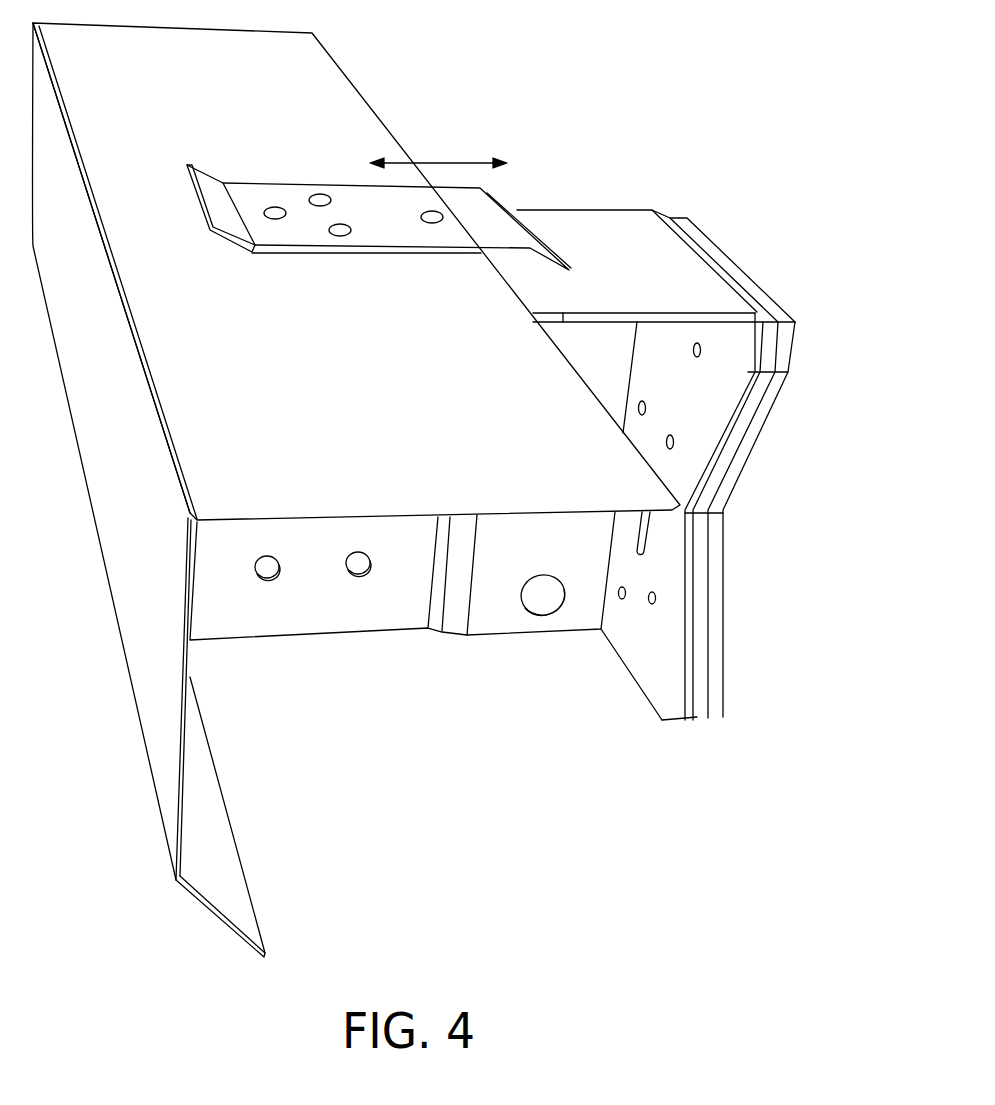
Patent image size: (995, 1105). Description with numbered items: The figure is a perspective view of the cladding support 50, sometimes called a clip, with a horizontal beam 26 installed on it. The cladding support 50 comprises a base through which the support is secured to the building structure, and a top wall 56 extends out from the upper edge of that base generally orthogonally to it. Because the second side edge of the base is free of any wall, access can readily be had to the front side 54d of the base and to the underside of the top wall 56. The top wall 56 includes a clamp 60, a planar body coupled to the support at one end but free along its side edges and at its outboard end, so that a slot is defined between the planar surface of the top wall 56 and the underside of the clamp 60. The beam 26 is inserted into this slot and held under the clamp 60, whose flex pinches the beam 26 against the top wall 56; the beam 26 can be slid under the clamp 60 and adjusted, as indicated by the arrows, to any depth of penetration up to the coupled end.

The beam 26 is at (317, 95).
The cladding support 50 is at (492, 630).
The front side of base 54d is at (703, 392).
The top wall 56 is at (597, 225).
The clamp 60 is at (470, 220).